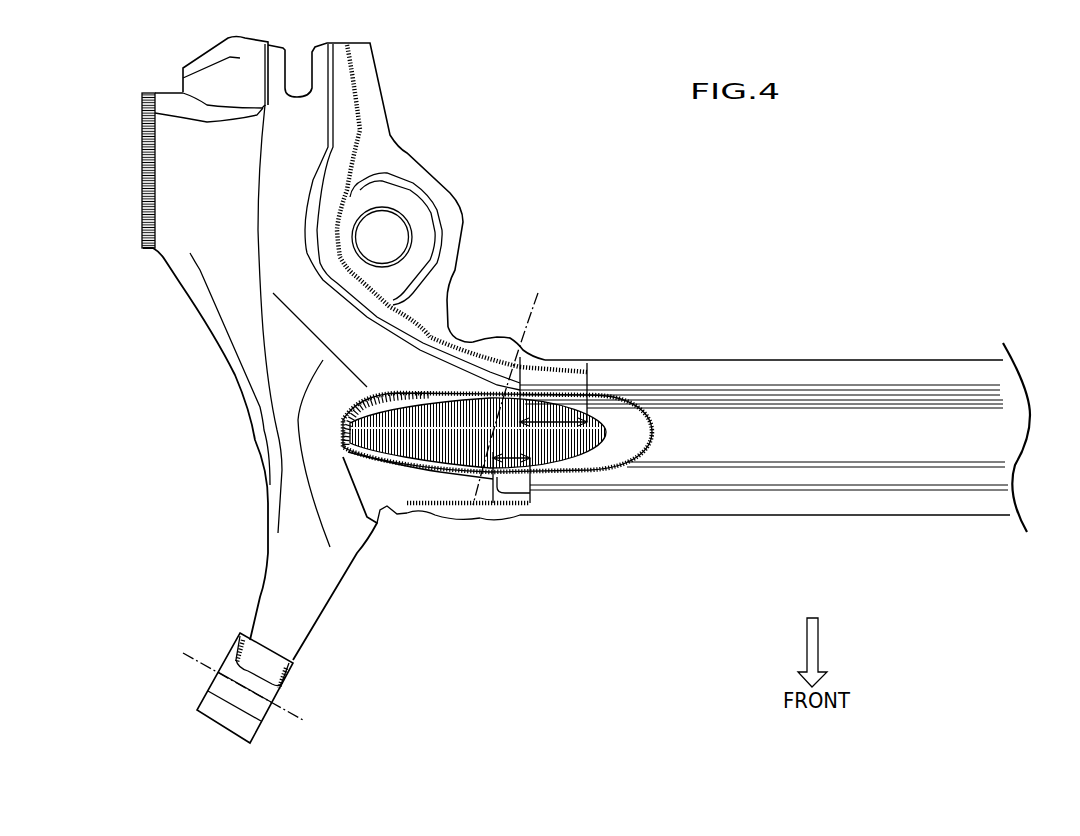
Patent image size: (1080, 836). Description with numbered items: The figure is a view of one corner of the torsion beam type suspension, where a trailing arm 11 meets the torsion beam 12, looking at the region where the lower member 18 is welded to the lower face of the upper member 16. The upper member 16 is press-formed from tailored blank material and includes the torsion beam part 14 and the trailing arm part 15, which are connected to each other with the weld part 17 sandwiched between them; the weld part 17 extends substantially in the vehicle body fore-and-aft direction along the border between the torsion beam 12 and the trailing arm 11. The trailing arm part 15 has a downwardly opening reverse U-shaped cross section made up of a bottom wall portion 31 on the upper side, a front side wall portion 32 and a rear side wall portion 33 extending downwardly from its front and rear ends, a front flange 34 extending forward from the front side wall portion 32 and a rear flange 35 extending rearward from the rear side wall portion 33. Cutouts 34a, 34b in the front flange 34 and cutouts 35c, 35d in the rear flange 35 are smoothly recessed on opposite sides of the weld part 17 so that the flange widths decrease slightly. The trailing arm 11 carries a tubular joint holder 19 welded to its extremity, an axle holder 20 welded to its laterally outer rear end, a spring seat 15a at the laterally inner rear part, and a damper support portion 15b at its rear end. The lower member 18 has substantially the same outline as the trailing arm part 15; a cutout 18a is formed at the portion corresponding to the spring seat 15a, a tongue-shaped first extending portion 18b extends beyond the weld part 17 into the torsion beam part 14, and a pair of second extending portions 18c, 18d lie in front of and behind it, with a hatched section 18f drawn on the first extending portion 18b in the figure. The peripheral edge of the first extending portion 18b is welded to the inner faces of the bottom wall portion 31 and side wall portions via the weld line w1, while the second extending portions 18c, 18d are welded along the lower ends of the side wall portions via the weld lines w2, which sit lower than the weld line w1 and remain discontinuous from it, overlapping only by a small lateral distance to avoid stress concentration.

The trailing arm 11 is at (187, 373).
The torsion beam 12 is at (950, 335).
The torsion beam part 14 is at (897, 520).
The trailing arm part 15 is at (253, 447).
The spring seat 15a is at (412, 208).
The damper support portion 15b is at (240, 58).
The upper member 16 is at (847, 423).
The weld part 17 is at (506, 393).
The lower member 18 is at (420, 320).
The cutout 18a is at (348, 207).
The first extending portion 18b is at (637, 427).
The second extending portion 18c is at (520, 500).
The second extending portion 18d is at (583, 376).
The hatched end section 18f is at (420, 437).
The joint holder 19 is at (220, 713).
The axle holder 20 is at (144, 160).
The bottom wall portion 31 is at (995, 435).
The front side wall portion 32 is at (813, 475).
The rear side wall portion 33 is at (907, 403).
The front flange 34 is at (728, 515).
The cutout 34a is at (510, 510).
The cutout 34b is at (440, 513).
The rear flange 35 is at (773, 373).
The cutout 35c is at (547, 353).
The cutout 35d is at (467, 332).
The weld line w1 is at (603, 402).
The weld line w2 is at (575, 368).